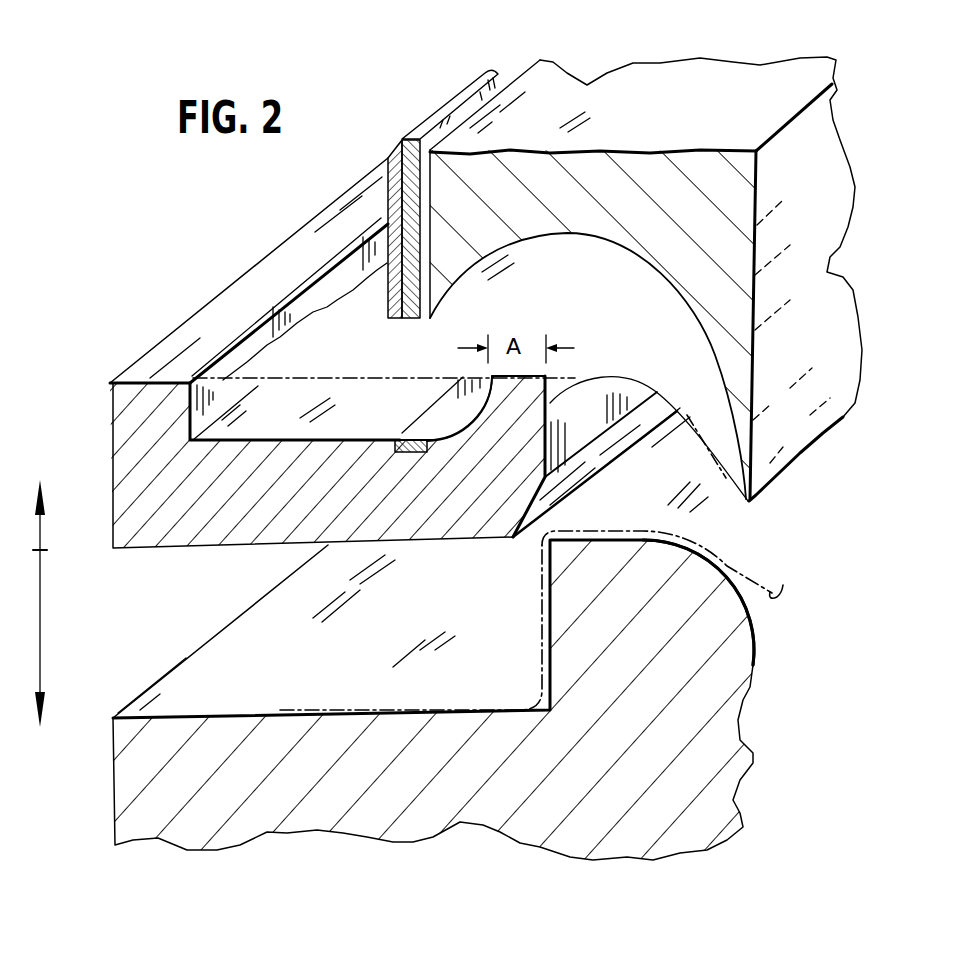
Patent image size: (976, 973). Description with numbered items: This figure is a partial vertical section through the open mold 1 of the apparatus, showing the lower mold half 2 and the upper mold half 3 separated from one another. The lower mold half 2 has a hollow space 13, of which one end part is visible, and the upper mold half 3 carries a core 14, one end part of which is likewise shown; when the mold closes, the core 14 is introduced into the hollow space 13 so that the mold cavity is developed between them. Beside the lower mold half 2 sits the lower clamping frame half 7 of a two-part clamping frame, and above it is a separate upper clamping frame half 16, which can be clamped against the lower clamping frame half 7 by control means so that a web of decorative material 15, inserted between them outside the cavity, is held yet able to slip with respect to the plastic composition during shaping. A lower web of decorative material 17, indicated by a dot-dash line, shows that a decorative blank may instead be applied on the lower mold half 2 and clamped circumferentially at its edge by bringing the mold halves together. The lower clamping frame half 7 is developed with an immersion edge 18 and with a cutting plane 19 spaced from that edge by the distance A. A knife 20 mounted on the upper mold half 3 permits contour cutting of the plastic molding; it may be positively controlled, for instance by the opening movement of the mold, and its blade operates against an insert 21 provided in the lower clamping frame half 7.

The mold 1 is at (864, 462).
The lower mold half 2 is at (415, 822).
The upper mold half 3 is at (705, 77).
The lower clamping frame half 7 is at (158, 360).
The hollow space 13 is at (758, 636).
The core 14 is at (741, 369).
The web of decorative material 15 is at (320, 305).
The upper clamping frame half 16 is at (393, 173).
The lower web of decorative material 17 is at (393, 707).
The immersion edge 18 is at (550, 403).
The cutting plane 19 is at (486, 420).
The knife 20 is at (470, 88).
The insert 21 is at (407, 433).